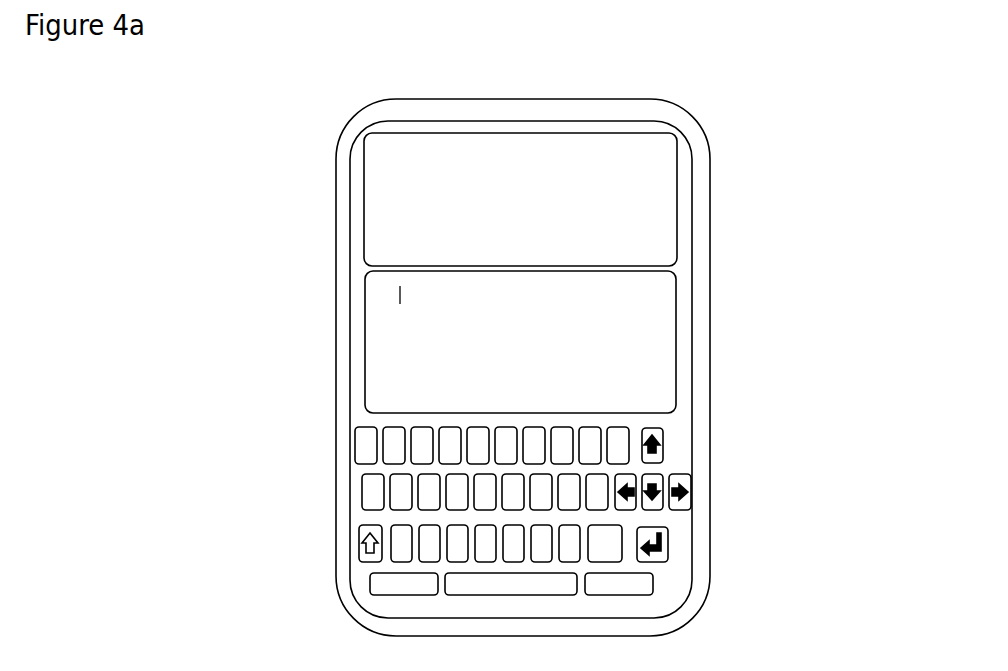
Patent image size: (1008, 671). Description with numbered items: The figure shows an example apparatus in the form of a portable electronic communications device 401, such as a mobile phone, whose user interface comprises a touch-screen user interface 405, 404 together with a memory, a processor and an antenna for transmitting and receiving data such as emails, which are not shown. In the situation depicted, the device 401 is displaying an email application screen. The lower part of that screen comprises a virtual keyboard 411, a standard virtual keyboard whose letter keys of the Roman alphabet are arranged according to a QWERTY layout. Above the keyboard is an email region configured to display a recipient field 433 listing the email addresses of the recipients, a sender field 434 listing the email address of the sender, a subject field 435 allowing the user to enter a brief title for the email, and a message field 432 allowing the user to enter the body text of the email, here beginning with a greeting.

The portable electronic communications device 401 is at (272, 581).
The touch-screen user interface 404 is at (631, 309).
The touch-screen user interface 405 is at (568, 397).
The virtual keyboard 411 is at (376, 490).
The message field 432 is at (392, 330).
The recipient field 433 is at (645, 150).
The sender field 434 is at (660, 200).
The subject field 435 is at (557, 247).